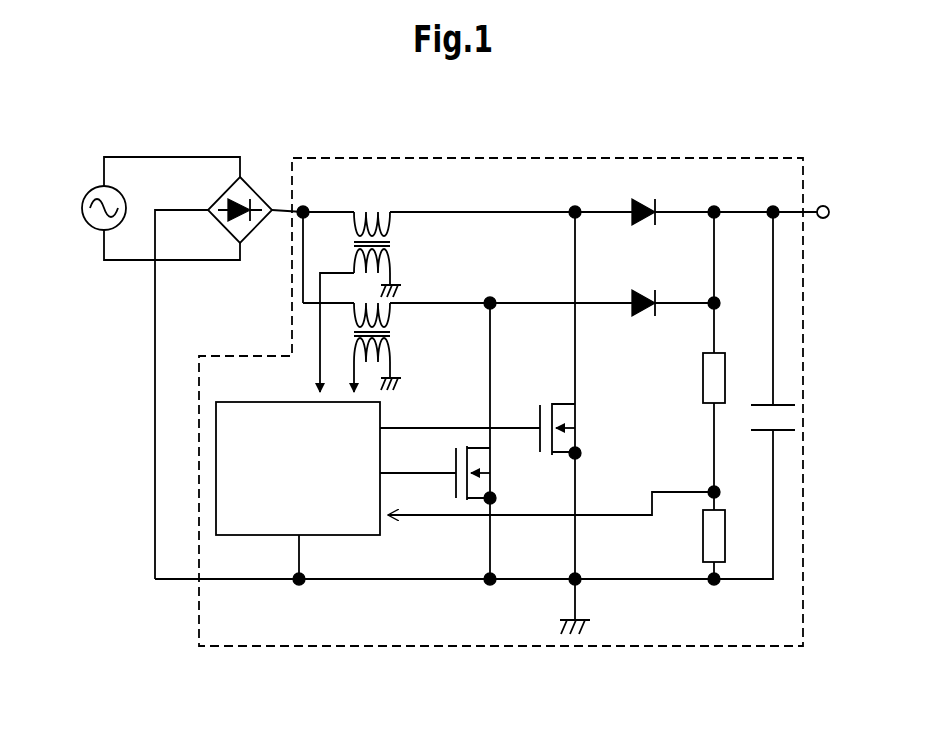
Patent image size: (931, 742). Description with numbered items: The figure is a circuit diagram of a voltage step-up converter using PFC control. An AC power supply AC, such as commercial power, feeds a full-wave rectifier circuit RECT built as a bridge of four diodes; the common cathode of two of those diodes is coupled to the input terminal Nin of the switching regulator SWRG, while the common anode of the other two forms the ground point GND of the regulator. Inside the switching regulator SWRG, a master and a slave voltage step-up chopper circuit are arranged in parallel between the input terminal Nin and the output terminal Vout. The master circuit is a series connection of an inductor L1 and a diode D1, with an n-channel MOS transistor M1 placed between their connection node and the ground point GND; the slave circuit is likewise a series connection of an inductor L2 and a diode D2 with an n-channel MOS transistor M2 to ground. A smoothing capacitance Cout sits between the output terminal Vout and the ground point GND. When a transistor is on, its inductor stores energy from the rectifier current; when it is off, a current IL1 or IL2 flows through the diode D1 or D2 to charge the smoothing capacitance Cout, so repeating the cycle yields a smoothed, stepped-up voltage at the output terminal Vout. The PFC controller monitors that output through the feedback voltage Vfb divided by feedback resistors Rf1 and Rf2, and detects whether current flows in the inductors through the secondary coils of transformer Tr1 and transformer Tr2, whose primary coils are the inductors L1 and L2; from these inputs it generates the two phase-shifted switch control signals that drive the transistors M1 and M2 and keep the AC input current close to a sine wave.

The switching regulator SWRG is at (642, 647).
The AC power supply AC is at (143, 208).
The full-wave rectifier circuit RECT is at (247, 178).
The input terminal Nin is at (305, 210).
The inductor L1 is at (371, 208).
The transformer Tr1 is at (400, 212).
The current IL1 is at (478, 200).
The inductor L2 is at (362, 302).
The transformer Tr2 is at (400, 303).
The current IL2 is at (478, 292).
The diode D1 is at (641, 195).
The diode D2 is at (602, 323).
The output terminal Vout is at (790, 213).
The feedback resistor Rf1 is at (730, 352).
The feedback resistor Rf2 is at (730, 535).
The smoothing capacitance Cout is at (501, 395).
The n-channel MOS transistor M1 is at (579, 395).
The n-channel MOS transistor M2 is at (494, 441).
The feedback voltage Vfb is at (607, 517).
The ground point GND is at (550, 610).